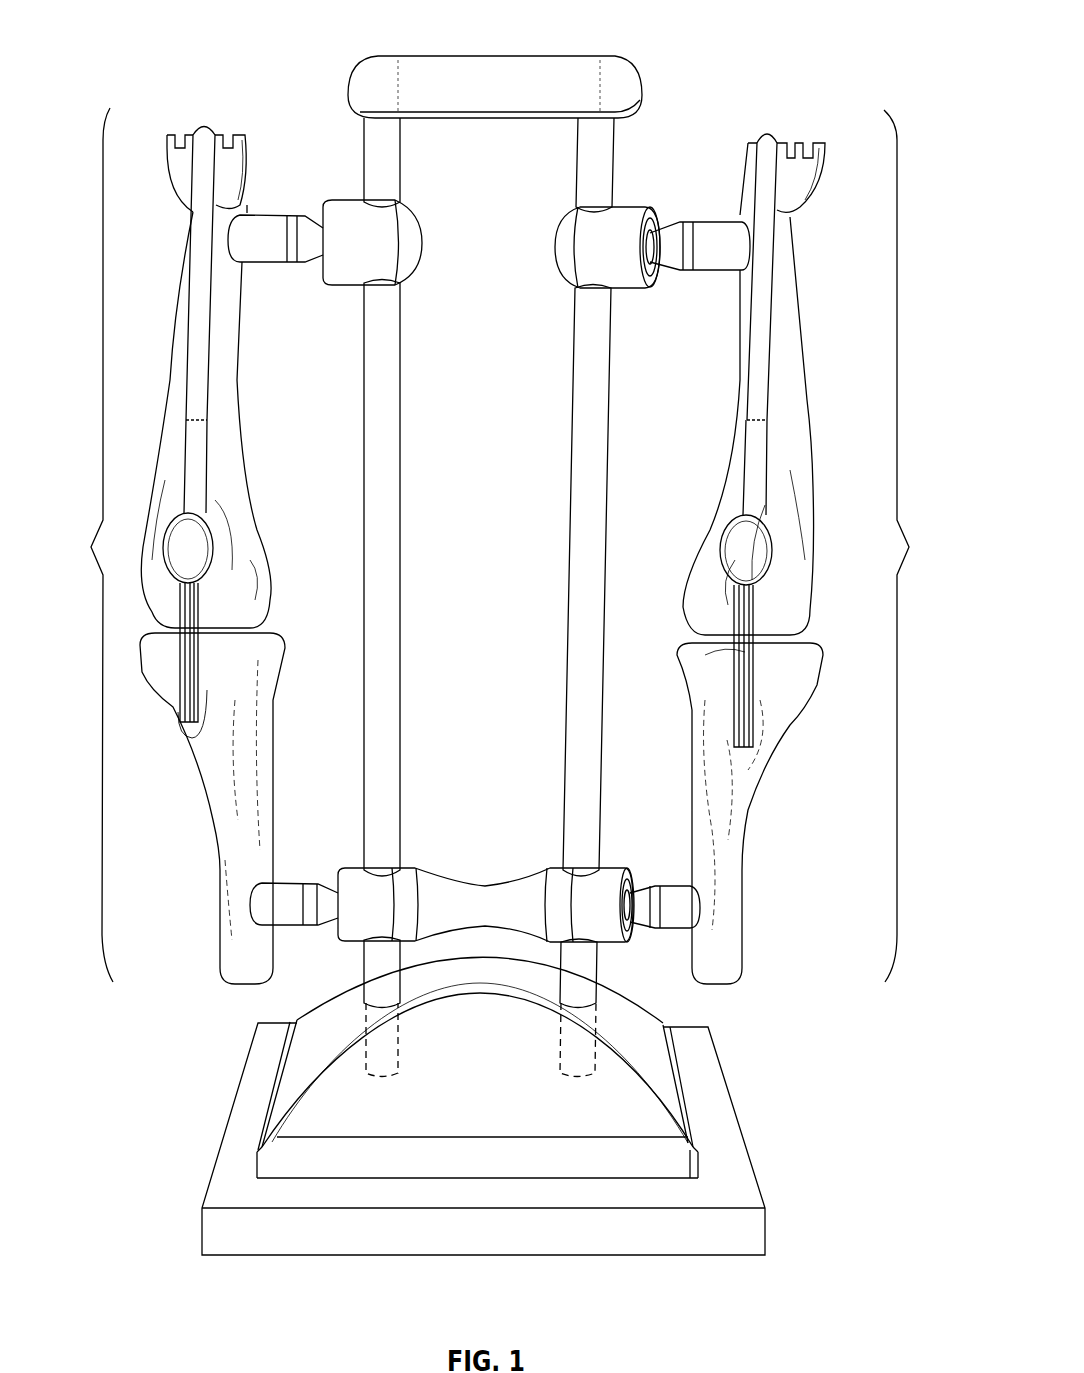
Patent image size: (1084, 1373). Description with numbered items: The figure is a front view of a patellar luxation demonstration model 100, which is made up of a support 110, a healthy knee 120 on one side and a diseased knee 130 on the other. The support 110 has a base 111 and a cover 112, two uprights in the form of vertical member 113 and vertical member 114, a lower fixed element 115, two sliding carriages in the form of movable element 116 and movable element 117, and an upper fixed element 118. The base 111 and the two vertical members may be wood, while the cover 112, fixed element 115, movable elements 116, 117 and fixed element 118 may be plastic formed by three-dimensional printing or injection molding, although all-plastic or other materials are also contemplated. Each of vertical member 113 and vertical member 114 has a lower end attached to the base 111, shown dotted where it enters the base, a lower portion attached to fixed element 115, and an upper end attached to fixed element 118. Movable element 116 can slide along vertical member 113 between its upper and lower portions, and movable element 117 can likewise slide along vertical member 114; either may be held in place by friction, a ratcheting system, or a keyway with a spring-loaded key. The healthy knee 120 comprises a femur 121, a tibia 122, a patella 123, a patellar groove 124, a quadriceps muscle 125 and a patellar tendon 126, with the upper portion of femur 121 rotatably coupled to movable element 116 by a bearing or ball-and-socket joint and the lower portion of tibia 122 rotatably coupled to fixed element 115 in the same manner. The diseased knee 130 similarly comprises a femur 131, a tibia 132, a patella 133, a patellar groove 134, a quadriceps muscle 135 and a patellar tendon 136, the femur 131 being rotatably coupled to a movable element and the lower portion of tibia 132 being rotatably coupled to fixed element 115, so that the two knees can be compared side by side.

The demonstration model 100 is at (845, 30).
The support 110 is at (503, 1143).
The base 111 is at (735, 1108).
The cover 112 is at (522, 1053).
The vertical member 113 is at (384, 452).
The vertical member 114 is at (583, 610).
The fixed element 115 is at (350, 940).
The movable element 116 is at (388, 223).
The movable element 117 is at (592, 243).
The fixed element 118 is at (370, 68).
The healthy knee 120 is at (196, 546).
The femur 121 is at (178, 338).
The tibia 122 is at (188, 765).
The patella 123 is at (192, 535).
The patellar groove 124 is at (205, 600).
The quadriceps muscle 125 is at (189, 253).
The patellar tendon 126 is at (185, 703).
The diseased knee 130 is at (786, 547).
The femur 131 is at (790, 396).
The tibia 132 is at (690, 706).
The patella 133 is at (750, 542).
The patellar groove 134 is at (763, 603).
The quadriceps muscle 135 is at (775, 263).
The patellar tendon 136 is at (727, 640).